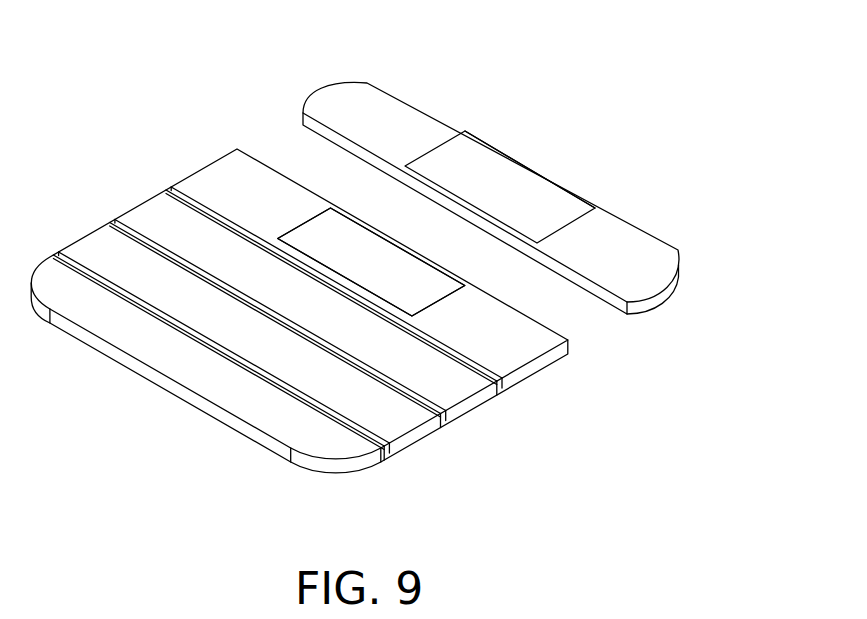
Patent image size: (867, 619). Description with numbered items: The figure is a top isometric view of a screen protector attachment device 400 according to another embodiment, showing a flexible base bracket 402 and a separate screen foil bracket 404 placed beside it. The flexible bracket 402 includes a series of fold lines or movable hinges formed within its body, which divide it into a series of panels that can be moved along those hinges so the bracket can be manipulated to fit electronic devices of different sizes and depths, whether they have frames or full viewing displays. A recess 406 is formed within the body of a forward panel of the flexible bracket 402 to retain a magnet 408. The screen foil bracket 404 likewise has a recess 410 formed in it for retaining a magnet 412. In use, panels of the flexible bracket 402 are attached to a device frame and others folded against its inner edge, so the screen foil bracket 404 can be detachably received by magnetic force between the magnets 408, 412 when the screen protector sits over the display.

The screen protector attachment device 400 is at (155, 88).
The flexible base bracket 402 is at (473, 410).
The screen foil bracket 404 is at (662, 291).
The recess 406 is at (301, 222).
The magnet 408 is at (420, 290).
The recess 410 is at (493, 147).
The magnet 412 is at (538, 200).